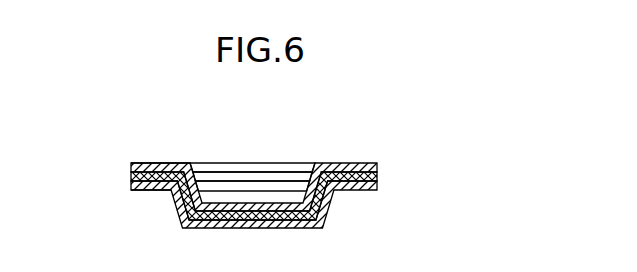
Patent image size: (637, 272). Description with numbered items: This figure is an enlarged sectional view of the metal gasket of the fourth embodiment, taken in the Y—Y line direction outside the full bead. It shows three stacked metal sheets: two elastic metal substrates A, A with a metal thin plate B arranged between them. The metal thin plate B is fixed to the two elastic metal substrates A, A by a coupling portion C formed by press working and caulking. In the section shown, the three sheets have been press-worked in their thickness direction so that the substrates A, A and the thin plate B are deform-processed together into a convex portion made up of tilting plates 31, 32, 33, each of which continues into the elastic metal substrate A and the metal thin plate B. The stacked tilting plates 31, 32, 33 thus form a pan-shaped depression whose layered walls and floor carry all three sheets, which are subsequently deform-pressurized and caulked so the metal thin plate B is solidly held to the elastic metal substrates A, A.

The tilting plate 31 is at (210, 175).
The tilting plate 32 is at (257, 192).
The tilting plate 33 is at (296, 178).
The elastic metal substrate A is at (345, 162).
The metal thin plate B is at (383, 177).
The coupling portion C is at (193, 162).